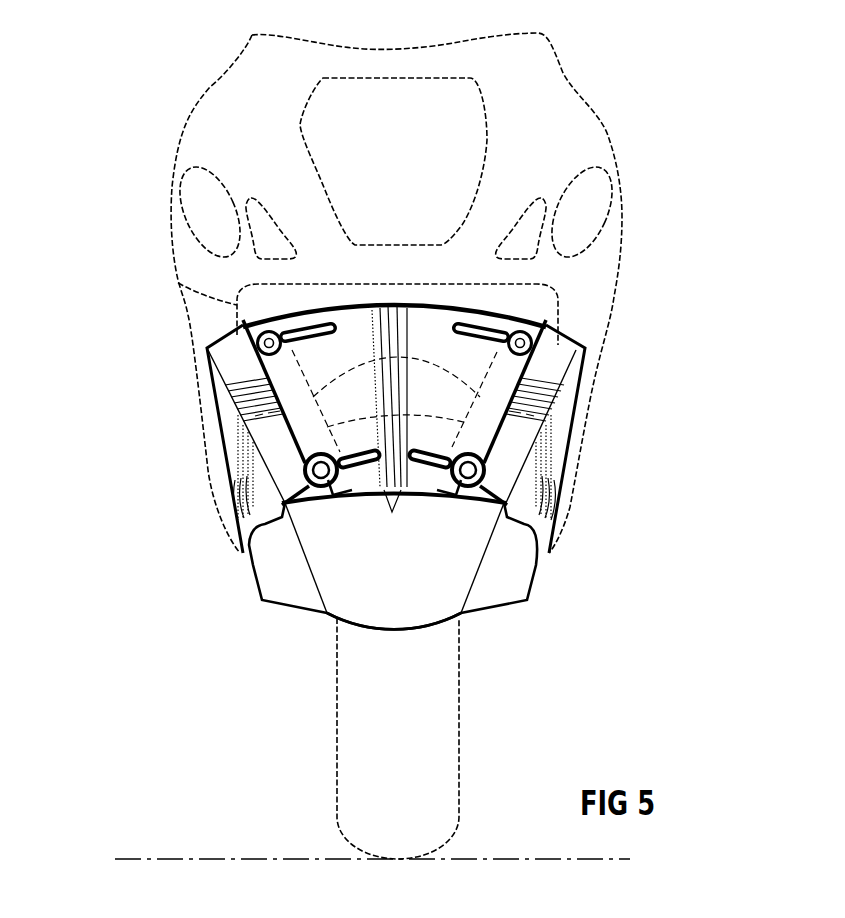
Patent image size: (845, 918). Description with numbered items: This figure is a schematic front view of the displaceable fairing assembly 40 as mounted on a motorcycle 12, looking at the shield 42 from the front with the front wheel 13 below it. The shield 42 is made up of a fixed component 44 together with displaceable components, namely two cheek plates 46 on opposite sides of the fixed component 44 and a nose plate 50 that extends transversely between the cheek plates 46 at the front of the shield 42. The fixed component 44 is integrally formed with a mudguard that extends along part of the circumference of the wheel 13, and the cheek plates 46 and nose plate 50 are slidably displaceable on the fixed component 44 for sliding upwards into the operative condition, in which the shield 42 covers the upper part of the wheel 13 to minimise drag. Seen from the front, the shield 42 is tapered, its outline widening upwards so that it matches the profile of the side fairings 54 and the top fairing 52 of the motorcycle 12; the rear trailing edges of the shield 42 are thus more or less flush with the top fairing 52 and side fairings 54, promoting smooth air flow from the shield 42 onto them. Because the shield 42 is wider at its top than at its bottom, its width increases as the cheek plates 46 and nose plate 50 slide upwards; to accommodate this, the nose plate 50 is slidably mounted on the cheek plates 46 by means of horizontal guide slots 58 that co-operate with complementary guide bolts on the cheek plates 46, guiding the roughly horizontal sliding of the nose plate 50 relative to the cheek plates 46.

The motorcycle 12 is at (716, 161).
The front wheel 13 is at (427, 720).
The fairing assembly 40 is at (454, 467).
The shield 42 is at (393, 566).
The fixed component 44 is at (414, 588).
The cheek plates 46 is at (268, 434).
The nose plate 50 is at (411, 322).
The top fairing 52 is at (553, 100).
The side fairings 54 is at (582, 323).
The horizontal guide slots 58 is at (318, 326).